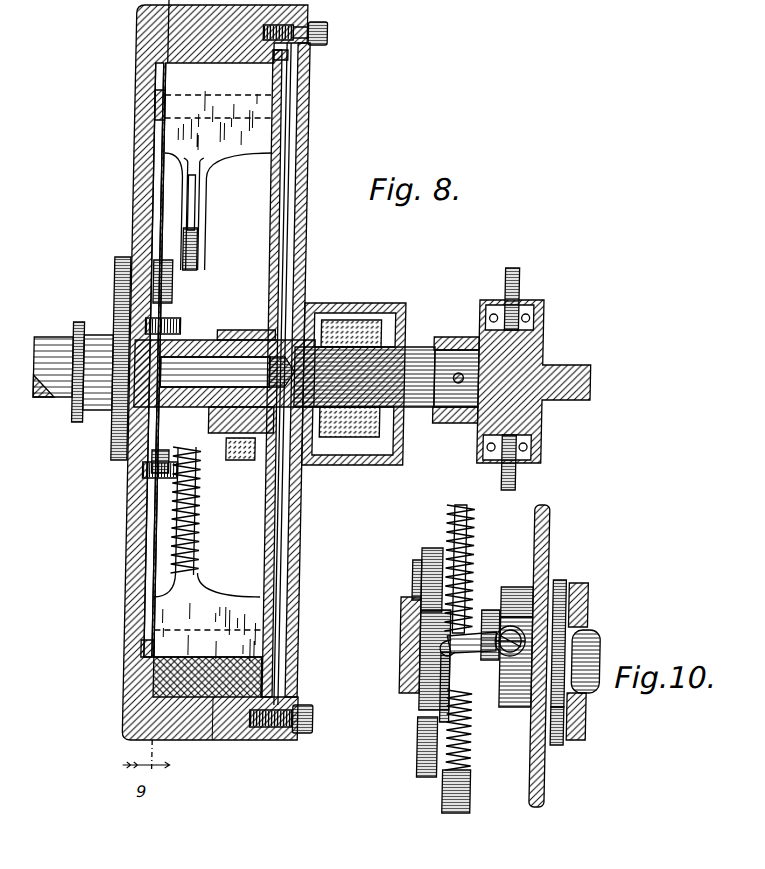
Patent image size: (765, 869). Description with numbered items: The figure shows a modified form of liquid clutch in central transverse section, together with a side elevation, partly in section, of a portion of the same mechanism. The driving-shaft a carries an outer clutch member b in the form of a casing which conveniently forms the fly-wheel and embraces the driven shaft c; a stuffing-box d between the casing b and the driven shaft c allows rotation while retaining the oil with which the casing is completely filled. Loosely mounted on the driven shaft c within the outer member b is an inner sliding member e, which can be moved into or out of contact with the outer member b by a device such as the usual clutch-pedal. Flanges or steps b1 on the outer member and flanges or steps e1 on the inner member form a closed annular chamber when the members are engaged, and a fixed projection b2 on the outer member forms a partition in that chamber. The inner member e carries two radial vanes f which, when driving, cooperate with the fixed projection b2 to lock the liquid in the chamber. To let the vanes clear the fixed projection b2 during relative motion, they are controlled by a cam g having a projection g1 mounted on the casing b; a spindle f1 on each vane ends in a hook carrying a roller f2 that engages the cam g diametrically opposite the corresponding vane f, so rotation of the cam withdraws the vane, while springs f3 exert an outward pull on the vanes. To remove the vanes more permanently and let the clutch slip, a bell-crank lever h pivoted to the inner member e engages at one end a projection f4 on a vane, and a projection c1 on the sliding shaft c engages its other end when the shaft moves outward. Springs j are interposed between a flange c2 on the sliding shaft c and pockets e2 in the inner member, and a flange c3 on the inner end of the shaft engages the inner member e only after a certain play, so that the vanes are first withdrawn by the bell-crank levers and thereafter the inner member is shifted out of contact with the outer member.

In FIG. 8, the driving-shaft a is at (57, 407).
In FIG. 8, the outer clutch member b is at (160, 600).
In FIG. 8, the flanges or steps b1 is at (337, 712).
In FIG. 8, the fixed projection b2 is at (226, 700).
In FIG. 8, the driven shaft c is at (420, 378).
In FIG. 10, the driven shaft c is at (598, 648).
In FIG. 8, the projection c1 is at (316, 297).
In FIG. 10, the projection c1 is at (473, 690).
In FIG. 8, the flange c2 is at (319, 322).
In FIG. 10, the flange c2 is at (590, 725).
In FIG. 8, the flange c3 is at (218, 320).
In FIG. 8, the stuffing-box d is at (378, 458).
In FIG. 8, the inner sliding member e is at (282, 573).
In FIG. 10, the inner sliding member e is at (558, 512).
In FIG. 8, the flanges or steps e1 is at (161, 655).
In FIG. 8, the pockets e2 is at (248, 453).
In FIG. 10, the pockets e2 is at (535, 588).
In FIG. 8, the radial vanes f is at (236, 137).
In FIG. 8, the spindle f1 is at (188, 232).
In FIG. 8, the roller f2 is at (78, 478).
In FIG. 10, the roller f2 is at (414, 775).
In FIG. 8, the springs f3 is at (173, 507).
In FIG. 10, the springs f3 is at (482, 540).
In FIG. 10, the projection f4 is at (431, 660).
In FIG. 8, the cam g is at (75, 335).
In FIG. 10, the cam g is at (424, 682).
In FIG. 8, the projection g1 is at (141, 323).
In FIG. 10, the projection g1 is at (436, 617).
In FIG. 8, the bell-crank lever h is at (122, 422).
In FIG. 10, the bell-crank lever h is at (487, 633).
In FIG. 8, the springs j is at (251, 318).
In FIG. 10, the springs j is at (577, 600).